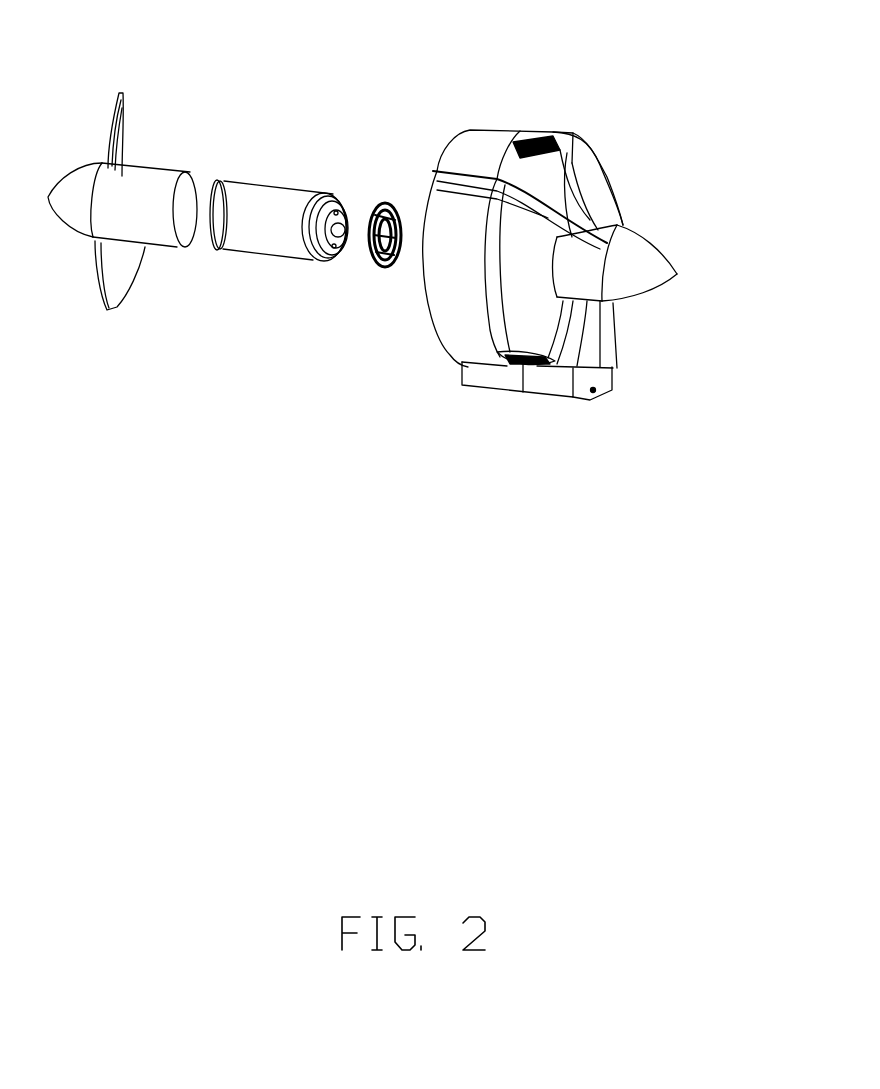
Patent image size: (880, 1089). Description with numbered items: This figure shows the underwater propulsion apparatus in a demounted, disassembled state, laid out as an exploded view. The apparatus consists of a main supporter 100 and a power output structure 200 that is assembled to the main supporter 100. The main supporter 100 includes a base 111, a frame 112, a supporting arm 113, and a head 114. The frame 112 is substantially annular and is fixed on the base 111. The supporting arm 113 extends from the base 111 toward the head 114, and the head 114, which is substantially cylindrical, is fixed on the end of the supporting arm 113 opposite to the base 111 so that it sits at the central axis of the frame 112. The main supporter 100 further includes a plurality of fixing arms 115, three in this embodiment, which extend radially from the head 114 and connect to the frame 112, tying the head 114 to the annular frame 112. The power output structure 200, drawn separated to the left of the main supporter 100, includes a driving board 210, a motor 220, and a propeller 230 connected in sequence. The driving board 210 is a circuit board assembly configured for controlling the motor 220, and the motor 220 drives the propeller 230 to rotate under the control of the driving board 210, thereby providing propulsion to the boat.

The main supporter 100 is at (645, 197).
The base 111 is at (547, 385).
The frame 112 is at (466, 153).
The supporting arm 113 is at (607, 333).
The head 114 is at (640, 250).
The fixing arms 115 is at (603, 160).
The power output structure 200 is at (402, 57).
The driving board 210 is at (392, 205).
The motor 220 is at (270, 202).
The propeller 230 is at (152, 188).